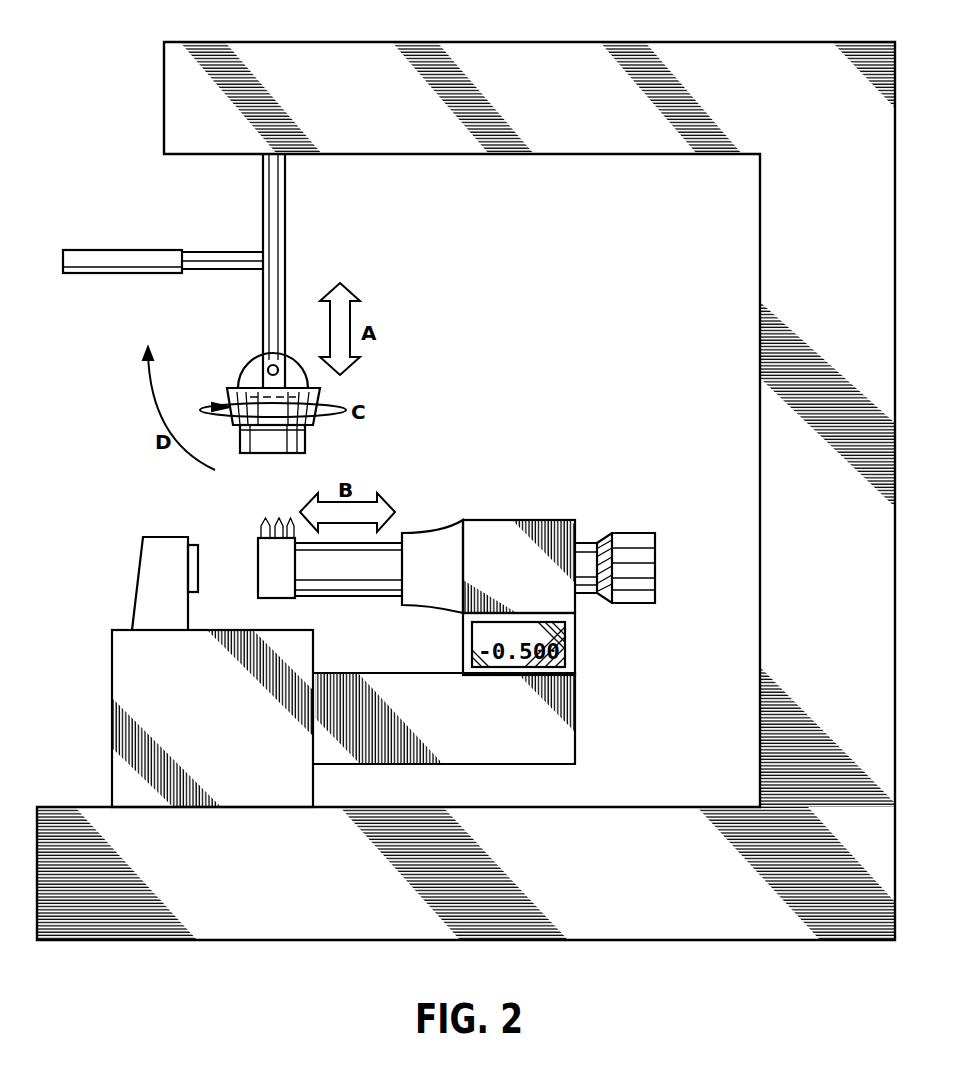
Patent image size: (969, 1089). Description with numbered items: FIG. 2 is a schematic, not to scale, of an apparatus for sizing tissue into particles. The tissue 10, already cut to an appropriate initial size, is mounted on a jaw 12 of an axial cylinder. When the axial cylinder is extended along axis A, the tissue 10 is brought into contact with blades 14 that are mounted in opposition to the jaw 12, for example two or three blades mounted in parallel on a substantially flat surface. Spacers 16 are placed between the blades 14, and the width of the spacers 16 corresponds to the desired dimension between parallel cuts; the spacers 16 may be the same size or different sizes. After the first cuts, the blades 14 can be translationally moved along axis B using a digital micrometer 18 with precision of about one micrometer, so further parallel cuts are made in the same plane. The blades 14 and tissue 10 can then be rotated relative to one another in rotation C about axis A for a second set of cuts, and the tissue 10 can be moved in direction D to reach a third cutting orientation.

The tissue 10 is at (305, 441).
The jaw 12 is at (228, 396).
The blades 14 is at (258, 524).
The spacers 16 is at (267, 520).
The digital micrometer 18 is at (636, 533).